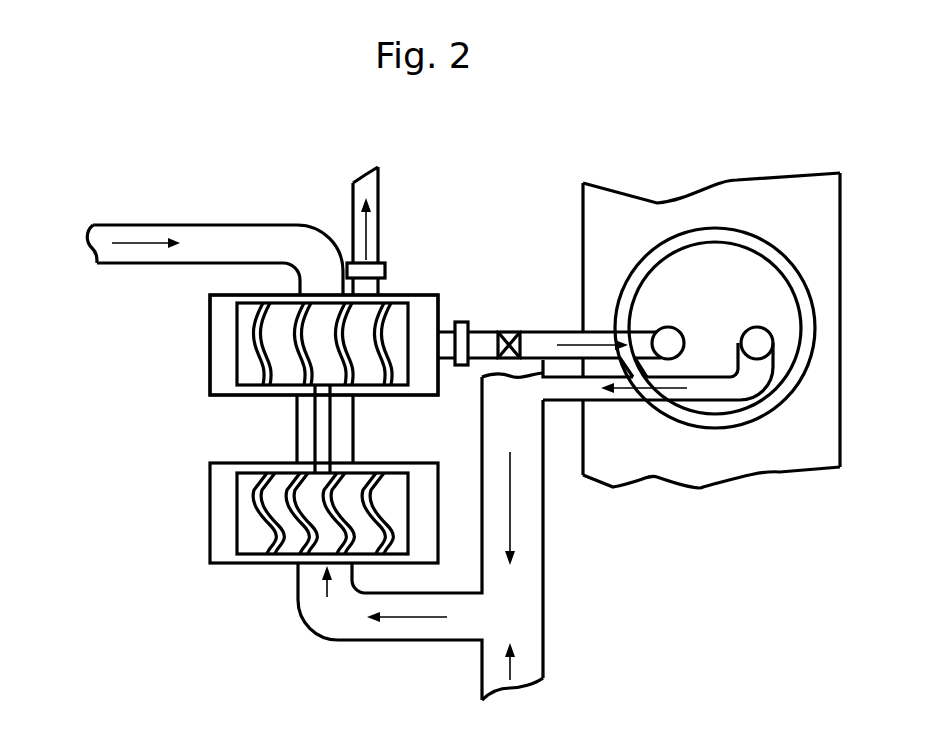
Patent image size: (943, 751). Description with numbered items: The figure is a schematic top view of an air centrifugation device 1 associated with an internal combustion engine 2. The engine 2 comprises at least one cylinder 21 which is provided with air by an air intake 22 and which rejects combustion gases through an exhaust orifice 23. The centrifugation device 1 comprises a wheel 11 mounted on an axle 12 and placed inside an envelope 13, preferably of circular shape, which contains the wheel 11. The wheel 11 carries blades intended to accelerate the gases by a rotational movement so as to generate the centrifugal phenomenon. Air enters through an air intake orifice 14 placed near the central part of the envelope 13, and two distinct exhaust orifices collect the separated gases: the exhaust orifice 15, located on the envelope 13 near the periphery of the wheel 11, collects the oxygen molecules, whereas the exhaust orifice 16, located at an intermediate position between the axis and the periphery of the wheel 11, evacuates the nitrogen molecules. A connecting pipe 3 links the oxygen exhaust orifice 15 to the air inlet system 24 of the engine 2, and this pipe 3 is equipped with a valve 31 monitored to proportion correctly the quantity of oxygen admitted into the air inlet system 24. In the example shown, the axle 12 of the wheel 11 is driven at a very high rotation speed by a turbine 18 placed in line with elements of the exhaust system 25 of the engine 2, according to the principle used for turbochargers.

The air centrifugation device 1 is at (418, 313).
The internal combustion engine 2 is at (773, 212).
The connecting pipe 3 is at (485, 345).
The wheel 11 is at (255, 360).
The axle 12 is at (325, 433).
The envelope 13 is at (210, 328).
The air intake orifice 14 is at (317, 270).
The exhaust orifice 15 is at (465, 367).
The exhaust orifice 16 is at (380, 273).
The turbine 18 is at (237, 519).
The cylinder 21 is at (712, 287).
The air intake 22 is at (665, 343).
The exhaust orifice 23 is at (760, 350).
The air inlet system 24 is at (546, 334).
The exhaust system 25 is at (342, 610).
The valve 31 is at (512, 325).